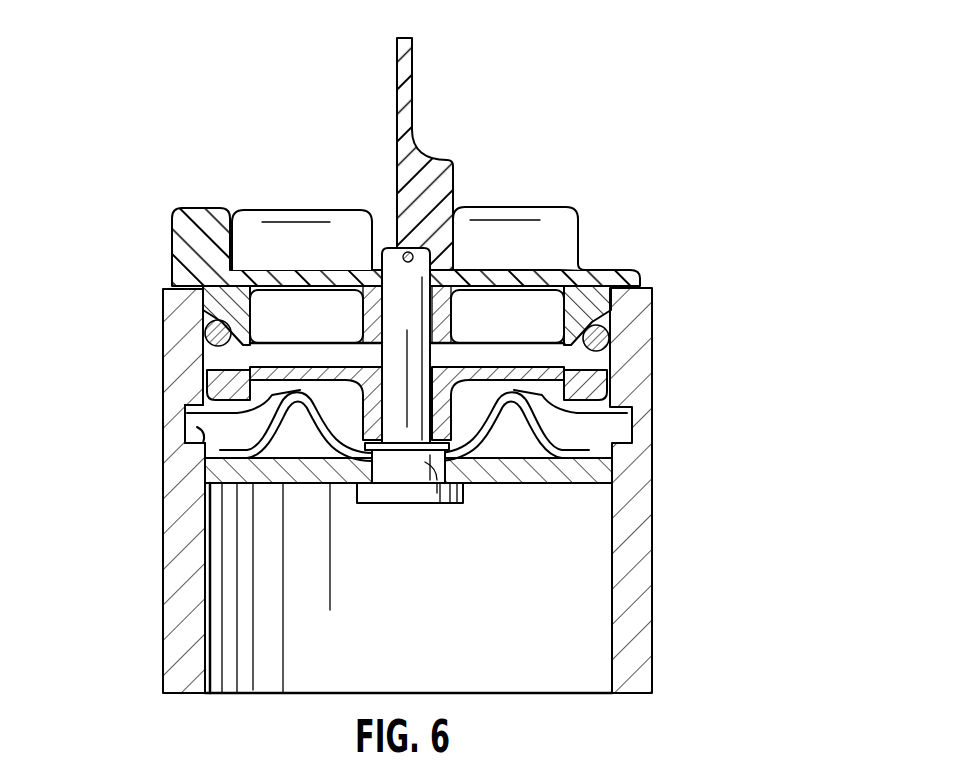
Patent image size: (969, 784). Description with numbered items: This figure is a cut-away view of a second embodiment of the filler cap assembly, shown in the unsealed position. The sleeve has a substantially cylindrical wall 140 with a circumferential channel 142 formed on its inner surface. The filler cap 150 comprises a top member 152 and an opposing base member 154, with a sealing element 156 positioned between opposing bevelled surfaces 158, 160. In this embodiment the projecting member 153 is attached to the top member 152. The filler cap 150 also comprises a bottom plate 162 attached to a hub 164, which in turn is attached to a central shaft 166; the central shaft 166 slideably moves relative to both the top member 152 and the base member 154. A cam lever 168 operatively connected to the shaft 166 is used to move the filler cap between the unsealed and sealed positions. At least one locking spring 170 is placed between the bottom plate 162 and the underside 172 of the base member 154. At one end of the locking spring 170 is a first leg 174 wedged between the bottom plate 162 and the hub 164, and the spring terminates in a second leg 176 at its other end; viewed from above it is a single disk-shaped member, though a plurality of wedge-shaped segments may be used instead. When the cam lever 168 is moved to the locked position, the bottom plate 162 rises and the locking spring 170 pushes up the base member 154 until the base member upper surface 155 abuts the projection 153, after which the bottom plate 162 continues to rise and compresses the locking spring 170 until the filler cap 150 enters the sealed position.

The cylindrical wall 140 is at (640, 562).
The circumferential channel 142 is at (203, 443).
The filler cap 150 is at (632, 248).
The top member 152 is at (637, 265).
The projecting member 153 is at (598, 326).
The base member 154 is at (603, 384).
The base member upper surface 155 is at (598, 368).
The sealing element 156 is at (600, 336).
The bevelled surface 158 is at (228, 375).
The bevelled surface 160 is at (213, 332).
The bottom plate 162 is at (273, 467).
The hub 164 is at (437, 507).
The central shaft 166 is at (400, 305).
The cam lever 168 is at (424, 152).
The locking spring 170 is at (598, 428).
The underside 172 is at (203, 413).
The first leg 174 is at (507, 460).
The second leg 176 is at (612, 478).